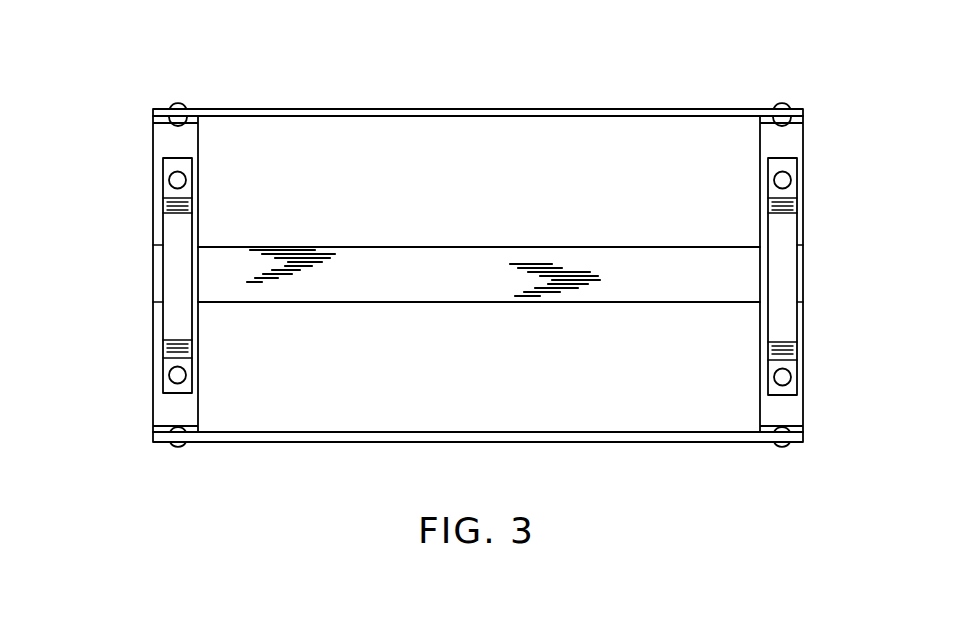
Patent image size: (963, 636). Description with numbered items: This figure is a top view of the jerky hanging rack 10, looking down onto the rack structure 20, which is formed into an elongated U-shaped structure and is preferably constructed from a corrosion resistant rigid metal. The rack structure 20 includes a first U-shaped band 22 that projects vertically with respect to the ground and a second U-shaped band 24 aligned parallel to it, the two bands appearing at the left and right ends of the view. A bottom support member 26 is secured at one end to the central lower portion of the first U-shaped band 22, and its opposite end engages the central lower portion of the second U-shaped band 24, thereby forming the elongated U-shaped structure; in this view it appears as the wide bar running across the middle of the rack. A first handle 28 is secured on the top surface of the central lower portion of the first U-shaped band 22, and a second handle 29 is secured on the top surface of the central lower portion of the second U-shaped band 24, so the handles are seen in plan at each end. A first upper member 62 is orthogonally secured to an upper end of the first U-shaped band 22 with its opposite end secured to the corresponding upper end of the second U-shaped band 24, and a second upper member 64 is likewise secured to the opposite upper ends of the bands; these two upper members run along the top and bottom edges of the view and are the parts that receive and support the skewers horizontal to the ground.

The jerky hanging rack 10 is at (186, 94).
The rack structure 20 is at (151, 405).
The first U-shaped band 22 is at (783, 415).
The second U-shaped band 24 is at (172, 138).
The bottom support member 26 is at (405, 265).
The first handle 28 is at (782, 245).
The second handle 29 is at (176, 305).
The first upper member 62 is at (456, 109).
The second upper member 64 is at (650, 443).